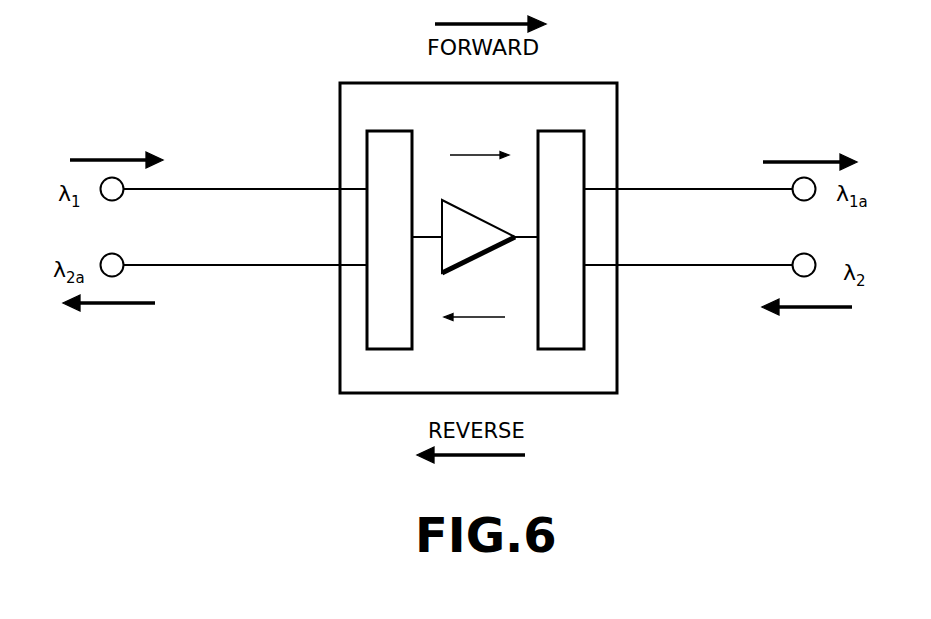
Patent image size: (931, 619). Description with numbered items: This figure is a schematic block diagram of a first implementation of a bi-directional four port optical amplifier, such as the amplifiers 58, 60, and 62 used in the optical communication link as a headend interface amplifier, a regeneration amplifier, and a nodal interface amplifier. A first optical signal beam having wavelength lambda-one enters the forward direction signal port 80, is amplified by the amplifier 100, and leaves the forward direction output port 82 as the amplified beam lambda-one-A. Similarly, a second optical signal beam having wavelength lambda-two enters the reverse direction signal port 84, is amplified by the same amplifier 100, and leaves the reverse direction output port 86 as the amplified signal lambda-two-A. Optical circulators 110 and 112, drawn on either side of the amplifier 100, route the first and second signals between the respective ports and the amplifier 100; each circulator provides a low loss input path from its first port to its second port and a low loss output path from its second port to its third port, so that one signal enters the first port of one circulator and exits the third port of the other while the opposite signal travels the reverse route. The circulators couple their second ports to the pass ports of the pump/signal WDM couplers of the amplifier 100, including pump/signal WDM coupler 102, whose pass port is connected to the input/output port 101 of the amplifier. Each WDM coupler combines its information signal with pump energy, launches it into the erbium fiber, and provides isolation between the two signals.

The bi-directional four port optical amplifier 58 is at (518, 218).
The bi-directional four port optical amplifier 60 is at (518, 218).
The bi-directional four port optical amplifier 62 is at (569, 83).
The forward direction signal port 80 is at (224, 189).
The forward direction output port 82 is at (680, 189).
The reverse direction signal port 84 is at (680, 265).
The reverse direction output port 86 is at (224, 265).
The amplifier 100 is at (472, 212).
The input/output port 101 is at (426, 233).
The pump/signal WDM coupler 102 is at (525, 240).
The optical circulator 110 is at (556, 131).
The optical circulator 112 is at (390, 131).